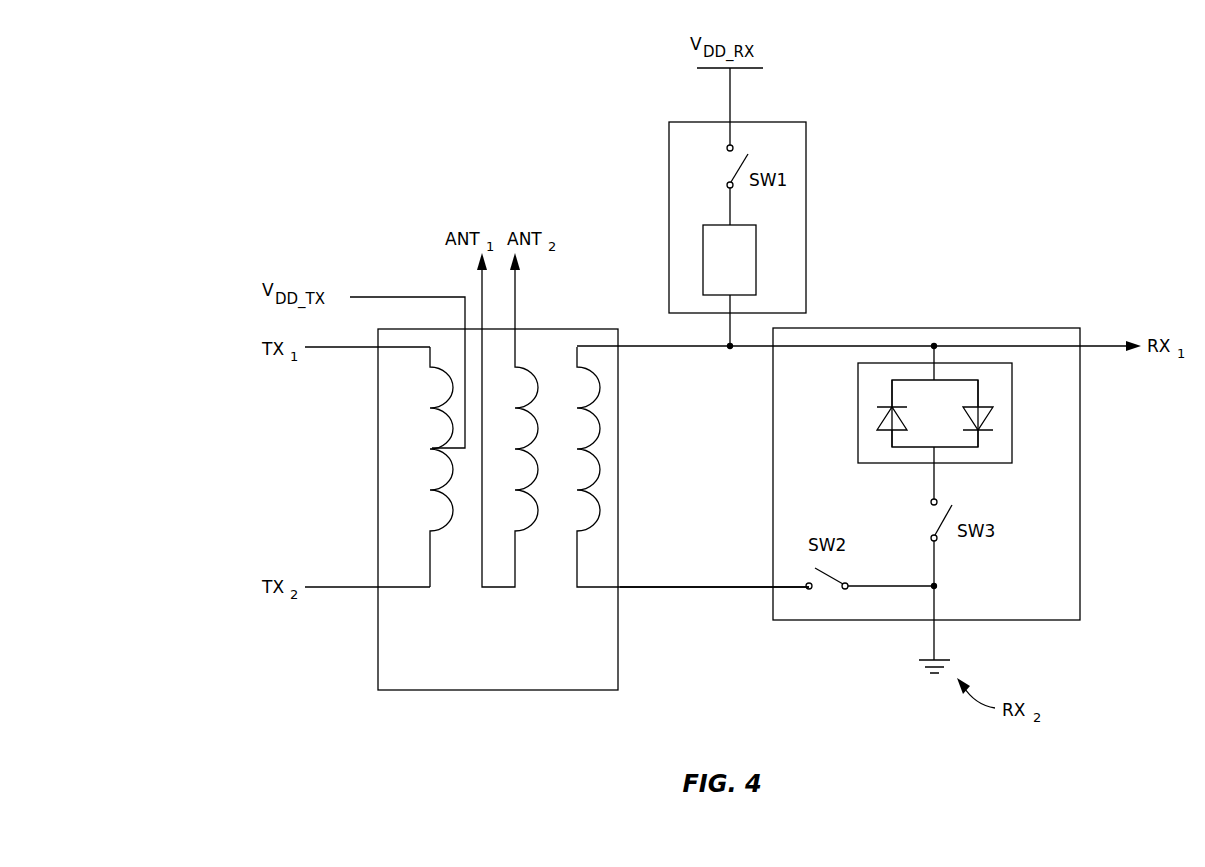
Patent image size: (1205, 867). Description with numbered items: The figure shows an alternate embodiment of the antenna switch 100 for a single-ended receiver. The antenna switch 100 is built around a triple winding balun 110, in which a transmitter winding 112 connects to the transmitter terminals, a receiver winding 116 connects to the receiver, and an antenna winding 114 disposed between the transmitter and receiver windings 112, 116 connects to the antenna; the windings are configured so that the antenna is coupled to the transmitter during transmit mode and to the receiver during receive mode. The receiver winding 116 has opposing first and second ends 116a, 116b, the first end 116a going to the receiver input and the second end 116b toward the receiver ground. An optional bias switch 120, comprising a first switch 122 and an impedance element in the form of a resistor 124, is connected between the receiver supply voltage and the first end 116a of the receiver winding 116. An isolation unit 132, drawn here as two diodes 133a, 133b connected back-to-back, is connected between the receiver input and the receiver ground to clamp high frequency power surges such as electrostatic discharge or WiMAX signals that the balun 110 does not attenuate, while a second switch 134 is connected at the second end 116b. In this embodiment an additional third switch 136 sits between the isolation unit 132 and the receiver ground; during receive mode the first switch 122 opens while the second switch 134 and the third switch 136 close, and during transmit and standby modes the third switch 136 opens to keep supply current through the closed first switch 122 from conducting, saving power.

The antenna switch 100 is at (948, 86).
The balun 110 is at (588, 690).
The transmitter winding 112 is at (436, 603).
The antenna winding 114 is at (528, 593).
The receiver winding 116 is at (562, 358).
The first end of the receiver winding 116a is at (655, 348).
The second end of the receiver winding 116b is at (652, 586).
The bias switch 120 is at (766, 122).
The switch SW1 122 is at (737, 170).
The resistor R1 124 is at (713, 286).
The isolation unit 132 is at (931, 422).
The diode 133a is at (880, 419).
The diode 133b is at (985, 412).
The switch SW2 134 is at (831, 574).
The switch SW3 136 is at (940, 522).